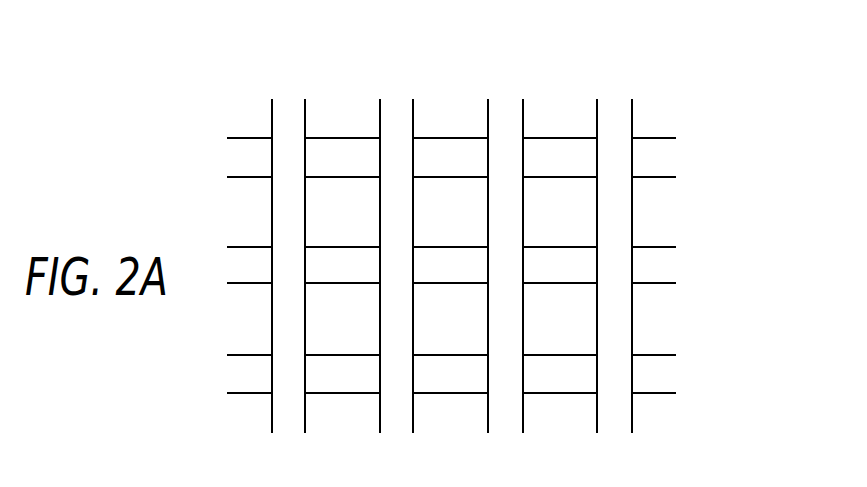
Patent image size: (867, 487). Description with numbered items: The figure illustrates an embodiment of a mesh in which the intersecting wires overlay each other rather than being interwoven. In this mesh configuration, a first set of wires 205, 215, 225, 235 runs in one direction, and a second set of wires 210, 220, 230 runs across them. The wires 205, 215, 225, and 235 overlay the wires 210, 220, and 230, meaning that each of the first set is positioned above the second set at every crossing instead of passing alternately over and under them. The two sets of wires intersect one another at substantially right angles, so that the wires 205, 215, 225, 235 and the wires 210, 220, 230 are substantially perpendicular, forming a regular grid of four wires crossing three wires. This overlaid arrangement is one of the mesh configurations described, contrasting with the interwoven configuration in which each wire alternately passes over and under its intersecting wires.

The wire 205 is at (288, 105).
The wire 215 is at (398, 105).
The wire 225 is at (503, 105).
The wire 235 is at (611, 100).
The wire 210 is at (664, 158).
The wire 220 is at (664, 266).
The wire 230 is at (664, 375).